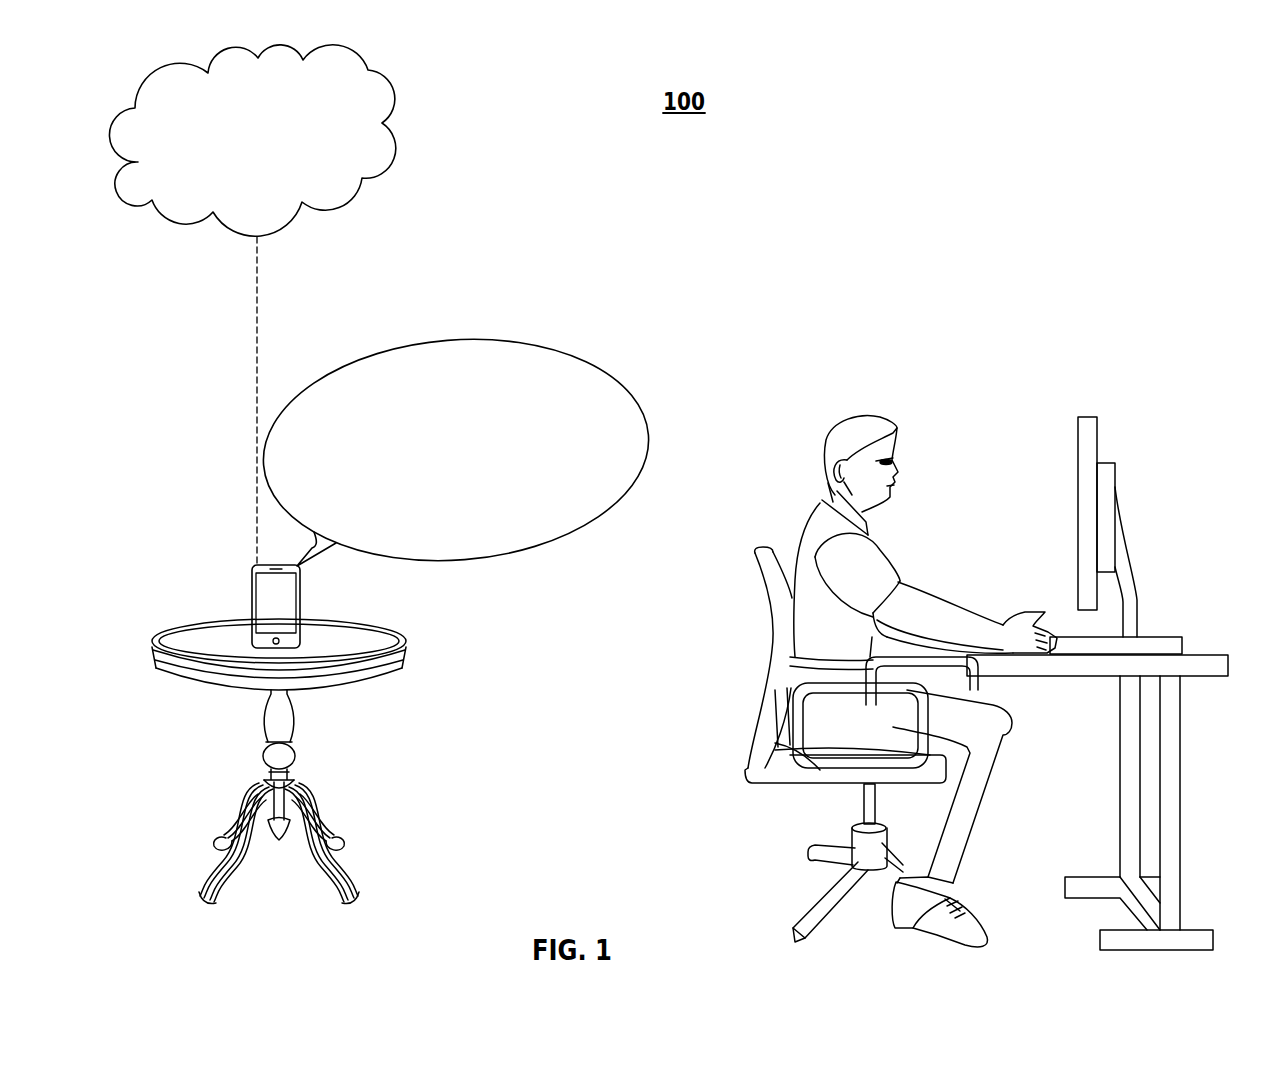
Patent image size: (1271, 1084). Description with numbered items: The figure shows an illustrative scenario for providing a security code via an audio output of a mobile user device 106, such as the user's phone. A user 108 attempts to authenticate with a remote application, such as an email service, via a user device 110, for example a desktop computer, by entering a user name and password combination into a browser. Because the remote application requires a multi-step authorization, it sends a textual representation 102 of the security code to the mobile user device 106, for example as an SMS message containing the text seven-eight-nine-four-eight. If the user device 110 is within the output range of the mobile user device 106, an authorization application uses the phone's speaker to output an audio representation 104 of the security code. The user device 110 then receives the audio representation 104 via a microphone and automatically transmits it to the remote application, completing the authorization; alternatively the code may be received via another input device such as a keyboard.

The textual representation of the security code 102 is at (142, 80).
The audio representation of the security code 104 is at (500, 343).
The mobile user device 106 is at (250, 593).
The user 108 is at (860, 414).
The user device 110 is at (1087, 417).